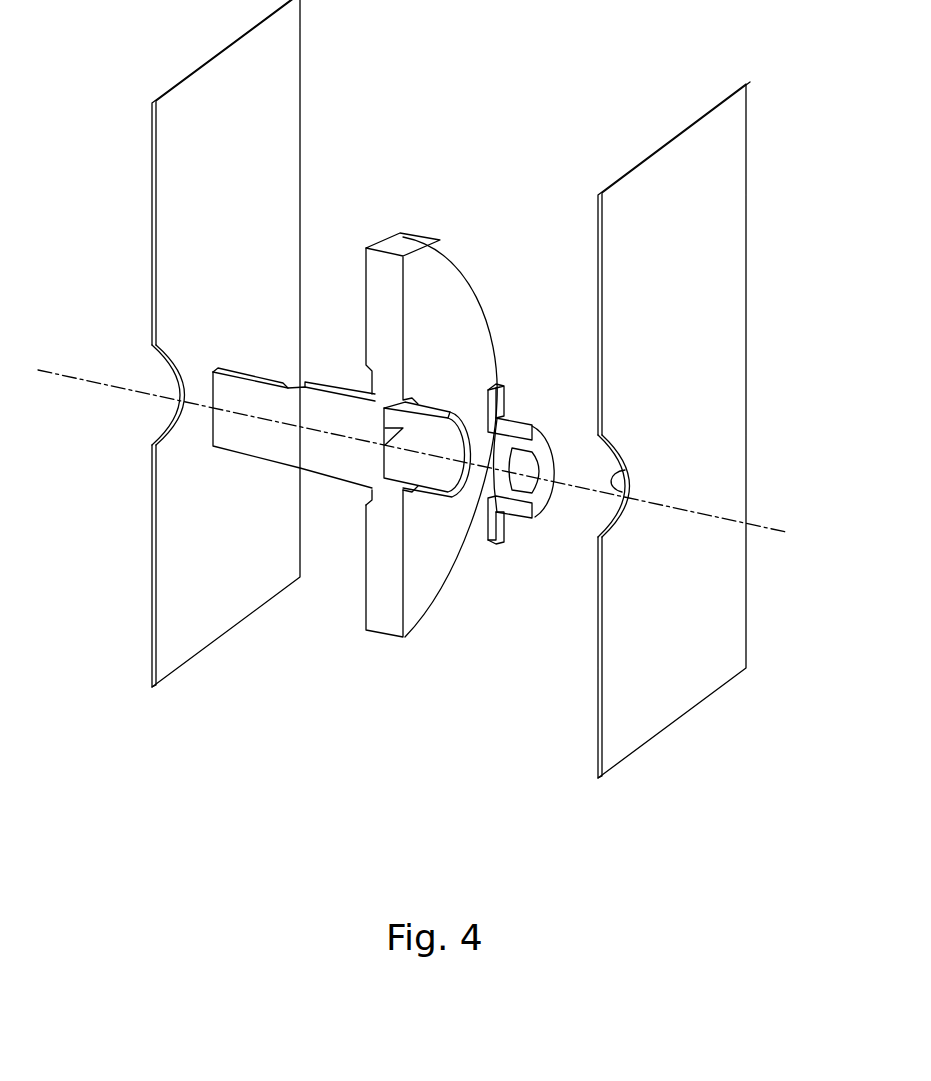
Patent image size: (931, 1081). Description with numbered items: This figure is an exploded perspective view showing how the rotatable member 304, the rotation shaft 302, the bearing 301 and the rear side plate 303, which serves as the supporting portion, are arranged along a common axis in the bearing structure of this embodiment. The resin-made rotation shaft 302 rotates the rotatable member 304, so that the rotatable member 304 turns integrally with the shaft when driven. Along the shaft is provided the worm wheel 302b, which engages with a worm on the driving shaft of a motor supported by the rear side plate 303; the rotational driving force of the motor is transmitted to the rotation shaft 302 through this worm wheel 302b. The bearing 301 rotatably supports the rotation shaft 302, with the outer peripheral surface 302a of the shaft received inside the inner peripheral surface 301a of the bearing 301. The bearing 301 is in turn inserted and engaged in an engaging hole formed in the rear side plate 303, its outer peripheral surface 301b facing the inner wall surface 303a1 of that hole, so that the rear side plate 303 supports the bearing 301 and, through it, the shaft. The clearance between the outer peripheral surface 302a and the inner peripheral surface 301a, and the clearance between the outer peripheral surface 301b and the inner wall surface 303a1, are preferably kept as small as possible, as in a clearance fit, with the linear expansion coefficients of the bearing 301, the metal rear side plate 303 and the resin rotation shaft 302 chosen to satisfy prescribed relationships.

The bearing 301 is at (490, 530).
The inner peripheral surface of the bearing 301a is at (512, 512).
The outer peripheral surface of the bearing 301b is at (515, 396).
The rotation shaft 302 is at (252, 443).
The outer peripheral surface of the rotation shaft 302a is at (440, 408).
The worm wheel 302b is at (436, 265).
The rear side plate 303 is at (668, 688).
The inner wall surface of the engaging hole 303a1 is at (623, 492).
The rotatable member 304 is at (217, 607).